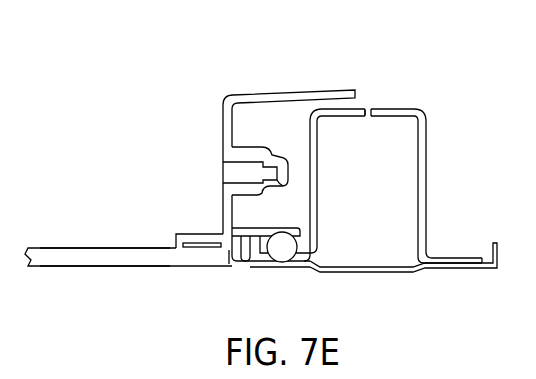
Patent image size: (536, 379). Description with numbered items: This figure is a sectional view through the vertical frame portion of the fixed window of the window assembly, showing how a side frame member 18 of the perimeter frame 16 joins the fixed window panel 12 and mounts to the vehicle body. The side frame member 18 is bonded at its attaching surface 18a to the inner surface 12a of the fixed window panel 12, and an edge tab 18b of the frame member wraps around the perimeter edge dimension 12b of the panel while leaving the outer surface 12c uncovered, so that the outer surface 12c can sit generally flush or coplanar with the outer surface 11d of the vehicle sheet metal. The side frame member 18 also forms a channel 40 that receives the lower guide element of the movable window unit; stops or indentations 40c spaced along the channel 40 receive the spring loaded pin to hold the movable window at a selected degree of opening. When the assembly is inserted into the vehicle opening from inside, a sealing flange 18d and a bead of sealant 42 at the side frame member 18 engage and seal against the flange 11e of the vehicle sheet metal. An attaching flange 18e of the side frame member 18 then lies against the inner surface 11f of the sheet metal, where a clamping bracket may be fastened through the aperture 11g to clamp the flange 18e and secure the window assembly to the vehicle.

The perimeter frame 16 is at (215, 70).
The side frame member 18 is at (249, 85).
The attaching flange 18e is at (320, 90).
The attaching surface 18a is at (193, 247).
The edge tab 18b is at (243, 262).
The sealing flange 18d is at (268, 261).
The channel 40 is at (235, 170).
The stop 40c is at (279, 177).
The fixed window panel 12 is at (58, 251).
The inner surface 12a is at (105, 247).
The perimeter edge dimension 12b is at (229, 258).
The outer surface 12c is at (148, 267).
The inner surface 11f is at (392, 107).
The aperture 11g is at (367, 118).
The flange 11e is at (293, 262).
The outer surface 11d is at (307, 265).
The bead of sealant 42 is at (290, 248).